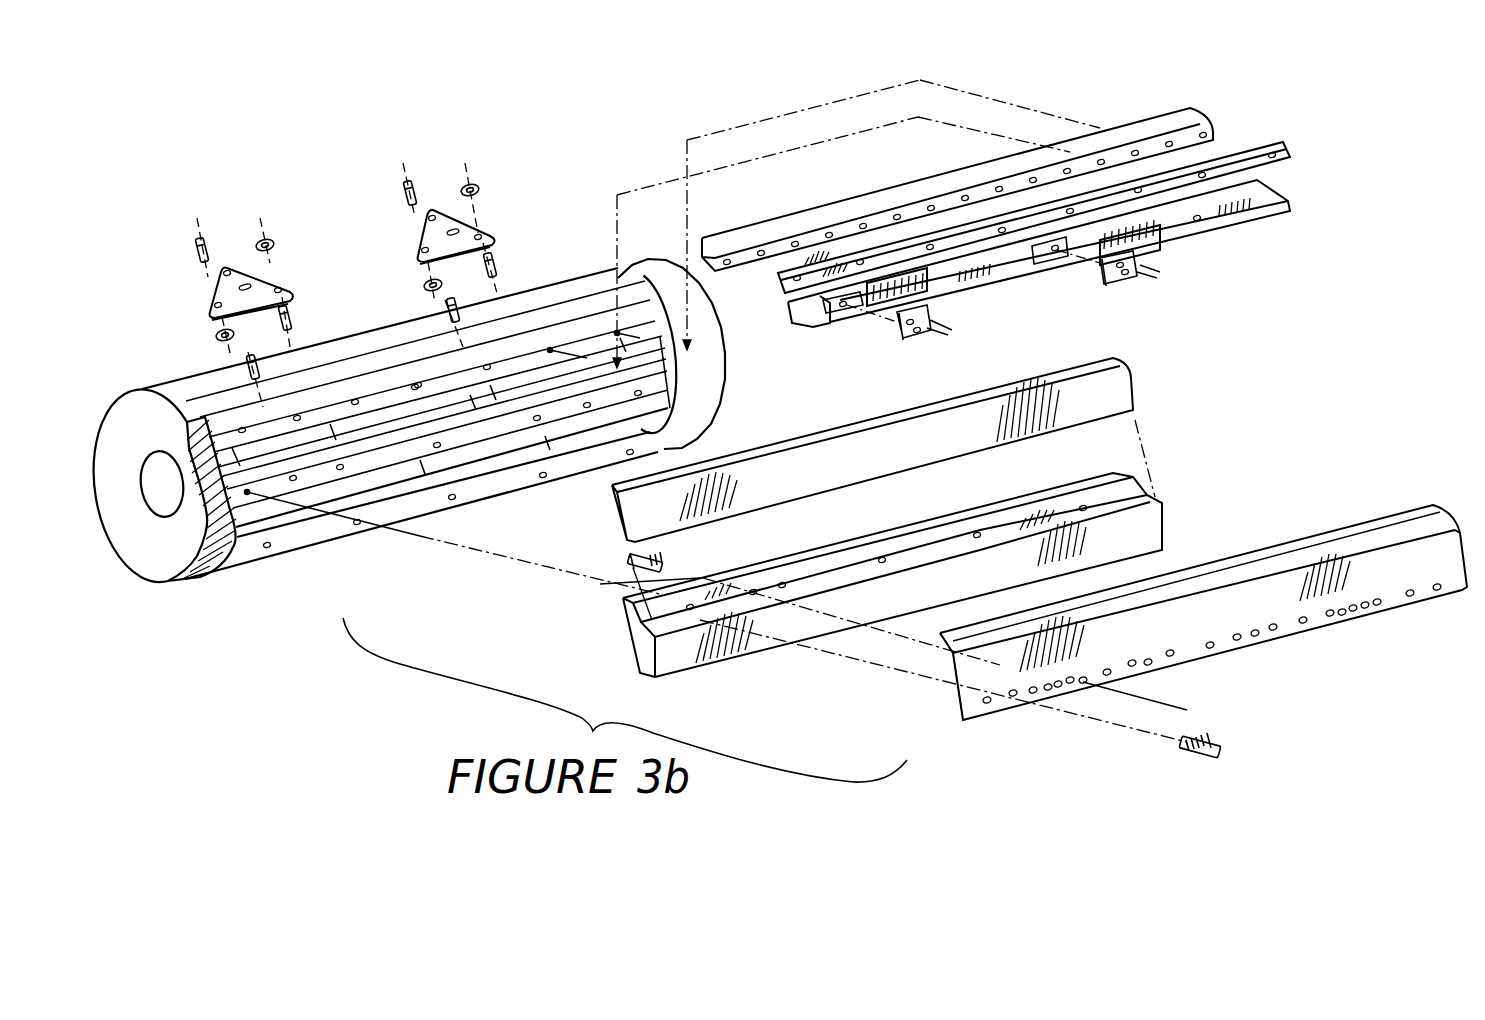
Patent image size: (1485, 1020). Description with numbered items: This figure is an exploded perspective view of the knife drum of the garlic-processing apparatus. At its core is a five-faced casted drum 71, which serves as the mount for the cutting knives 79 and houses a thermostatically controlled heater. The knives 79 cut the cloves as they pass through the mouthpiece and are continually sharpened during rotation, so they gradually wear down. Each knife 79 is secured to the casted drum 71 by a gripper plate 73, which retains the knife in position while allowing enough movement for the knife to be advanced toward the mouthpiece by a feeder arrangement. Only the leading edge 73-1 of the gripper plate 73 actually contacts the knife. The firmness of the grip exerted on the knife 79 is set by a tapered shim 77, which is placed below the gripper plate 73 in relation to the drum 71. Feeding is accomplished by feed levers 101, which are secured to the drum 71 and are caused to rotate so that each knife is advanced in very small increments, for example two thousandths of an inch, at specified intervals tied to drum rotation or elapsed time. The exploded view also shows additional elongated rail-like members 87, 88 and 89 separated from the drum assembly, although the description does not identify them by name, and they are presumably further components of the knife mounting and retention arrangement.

The casted drum 71 is at (197, 553).
The feed levers 101 is at (447, 225).
The guide rail 87 is at (1200, 123).
The strip 88 is at (1287, 147).
The support bar 89 is at (1287, 198).
The cutting knives 79 is at (1117, 387).
The tapered shim 77 is at (1150, 530).
The gripper plates 73 is at (975, 710).
The leading edge 73-1 is at (935, 650).